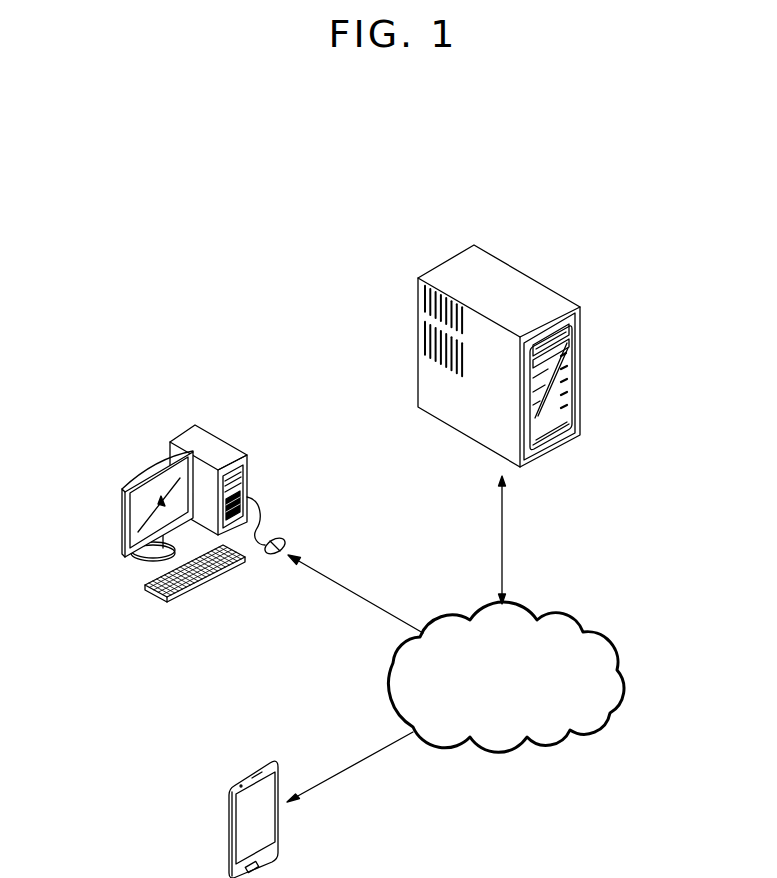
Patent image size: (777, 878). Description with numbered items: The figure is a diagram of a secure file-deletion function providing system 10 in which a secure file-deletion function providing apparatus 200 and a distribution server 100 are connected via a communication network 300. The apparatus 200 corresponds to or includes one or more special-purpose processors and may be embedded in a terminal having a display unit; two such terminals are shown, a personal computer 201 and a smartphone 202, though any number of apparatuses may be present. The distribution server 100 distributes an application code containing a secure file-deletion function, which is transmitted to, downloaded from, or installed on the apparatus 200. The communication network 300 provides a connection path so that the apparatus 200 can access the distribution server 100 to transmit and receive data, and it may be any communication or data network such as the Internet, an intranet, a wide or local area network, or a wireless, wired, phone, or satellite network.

The secure file-deletion function providing system 10 is at (686, 226).
The distribution server 100 is at (528, 276).
The secure file-deletion function providing apparatus 200 is at (95, 652).
The personal computer 201 is at (145, 592).
The smartphone 202 is at (230, 803).
The communication network 300 is at (550, 616).